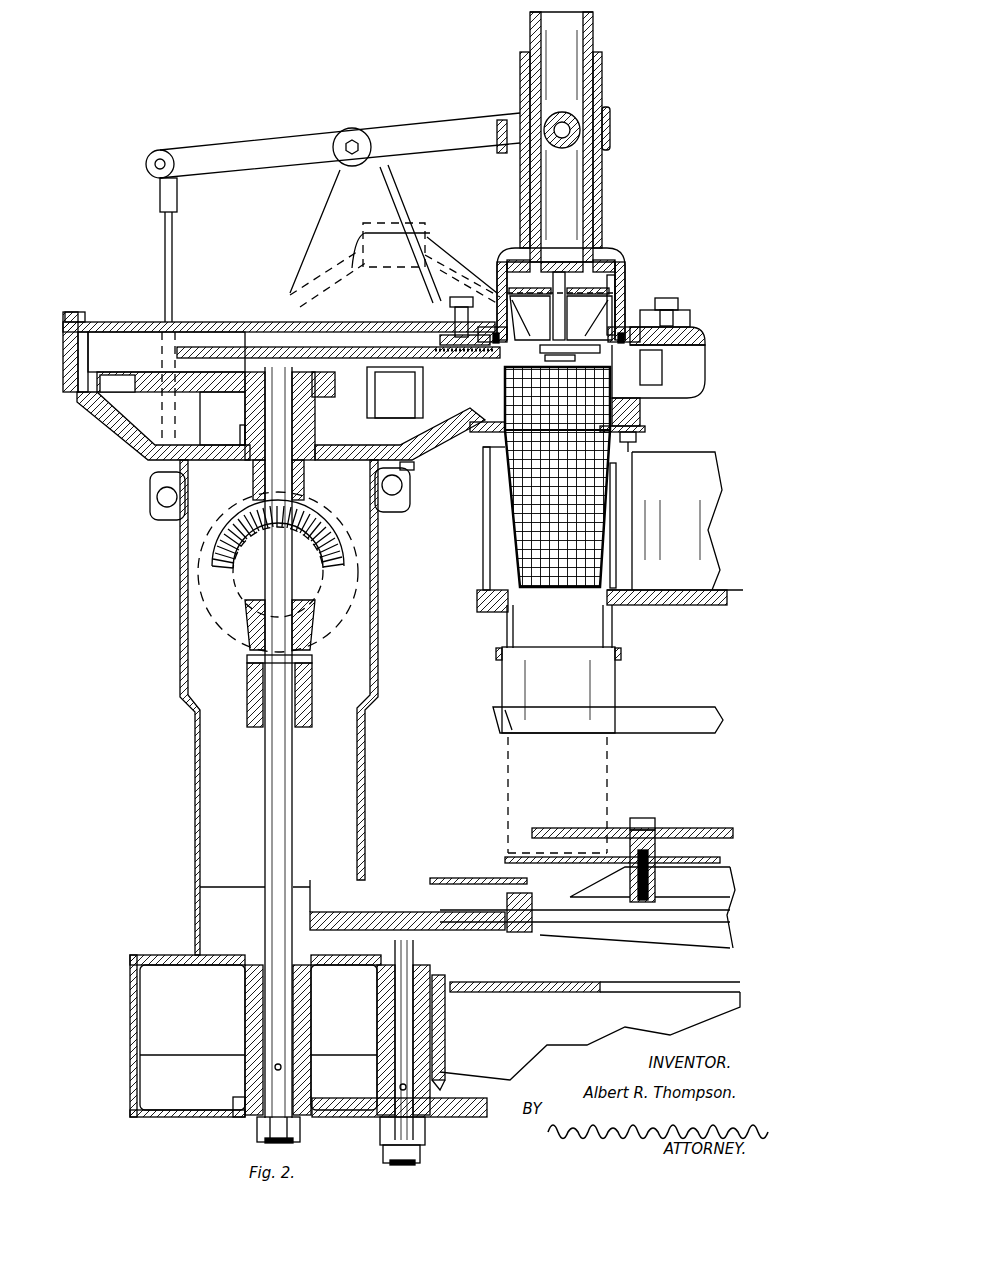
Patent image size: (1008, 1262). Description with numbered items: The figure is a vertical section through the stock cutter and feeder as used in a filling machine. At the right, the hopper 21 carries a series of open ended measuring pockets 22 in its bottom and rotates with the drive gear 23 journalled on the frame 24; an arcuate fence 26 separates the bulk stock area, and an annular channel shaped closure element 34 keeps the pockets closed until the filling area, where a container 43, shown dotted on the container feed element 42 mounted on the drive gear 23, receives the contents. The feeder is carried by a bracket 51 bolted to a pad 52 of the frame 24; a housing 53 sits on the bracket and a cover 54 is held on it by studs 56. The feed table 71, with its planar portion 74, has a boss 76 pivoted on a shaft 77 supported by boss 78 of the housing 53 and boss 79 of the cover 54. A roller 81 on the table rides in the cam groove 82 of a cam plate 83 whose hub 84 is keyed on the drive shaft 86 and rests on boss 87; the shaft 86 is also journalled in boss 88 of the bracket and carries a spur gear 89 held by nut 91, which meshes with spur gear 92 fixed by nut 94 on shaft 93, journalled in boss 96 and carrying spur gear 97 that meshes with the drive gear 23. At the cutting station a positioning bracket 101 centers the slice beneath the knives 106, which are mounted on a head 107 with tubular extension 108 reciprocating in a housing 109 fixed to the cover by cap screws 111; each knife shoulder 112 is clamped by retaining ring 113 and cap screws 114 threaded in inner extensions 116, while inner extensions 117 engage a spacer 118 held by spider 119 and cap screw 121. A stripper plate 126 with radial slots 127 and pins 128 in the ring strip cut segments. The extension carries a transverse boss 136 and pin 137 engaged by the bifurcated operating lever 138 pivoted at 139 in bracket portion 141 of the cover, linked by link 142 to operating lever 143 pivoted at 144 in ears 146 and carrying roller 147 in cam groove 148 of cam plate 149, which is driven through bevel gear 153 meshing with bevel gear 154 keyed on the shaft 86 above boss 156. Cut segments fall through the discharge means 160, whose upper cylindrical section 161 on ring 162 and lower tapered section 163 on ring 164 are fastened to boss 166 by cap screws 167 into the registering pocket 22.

The hopper 21 is at (483, 560).
The measuring pockets 22 is at (503, 685).
The drive gear 23 is at (556, 938).
The frame 24 is at (506, 983).
The arcuate fence 26 is at (634, 499).
The closure element 34 is at (640, 733).
The container feed element 42 is at (505, 869).
The container 43 is at (508, 804).
The bracket 51 is at (195, 813).
The pad 52 is at (447, 1038).
The housing 53 is at (130, 436).
The cover 54 is at (150, 321).
The studs 56 is at (70, 348).
The feed table 71 is at (314, 346).
The planar portion 74 is at (238, 320).
The boss 76 is at (424, 387).
The shaft 77 is at (393, 227).
The boss 78 is at (432, 418).
The boss 79 is at (428, 239).
The roller 81 is at (322, 396).
The cam groove 82 is at (119, 374).
The cam plate 83 is at (208, 394).
The hub 84 is at (247, 430).
The drive shaft 86 is at (292, 793).
The boss 87 is at (313, 493).
The boss 88 is at (246, 1021).
The spur gear 89 is at (234, 1099).
The nut 91 is at (258, 1133).
The spur gear 92 is at (367, 1118).
The shaft 93 is at (398, 1040).
The nut 94 is at (408, 1153).
The boss 96 is at (385, 1001).
The spur gear 97 is at (480, 932).
The positioning bracket 101 is at (664, 362).
The knives 106 is at (625, 326).
The head 107 is at (600, 250).
The tubular extension 108 is at (598, 193).
The housing 109 is at (595, 173).
The cap screws 111 is at (458, 296).
The shoulder 112 is at (616, 272).
The retaining ring 113 is at (620, 292).
The cap screws 114 is at (602, 262).
The inner extensions 116 is at (589, 318).
The extensions 117 is at (566, 291).
The spacer 118 is at (552, 291).
The spider 119 is at (530, 318).
The cap screw 121 is at (562, 298).
The stripper plate 126 is at (470, 346).
The radial slots 127 is at (568, 360).
The pins 128 is at (548, 366).
The transverse boss 136 is at (580, 110).
The pin 137 is at (563, 150).
The operating lever 138 is at (420, 130).
The pivot 139 is at (345, 134).
The bracket portion 141 is at (320, 231).
The link 142 is at (163, 241).
The operating lever 143 is at (180, 541).
The pivot 144 is at (397, 493).
The ears 146 is at (414, 468).
The roller 147 is at (312, 513).
The cam groove 148 is at (315, 647).
The cam plate 149 is at (385, 578).
The bevel gear 153 is at (323, 564).
The bevel gear 154 is at (310, 666).
The boss 156 is at (306, 723).
The discharge means 160 is at (606, 549).
The upper cylindrical section 161 is at (652, 392).
The ring 162 is at (646, 429).
The lower tapered section 163 is at (616, 473).
The ring 164 is at (637, 437).
The boss 166 is at (642, 416).
The cap screws 167 is at (630, 444).